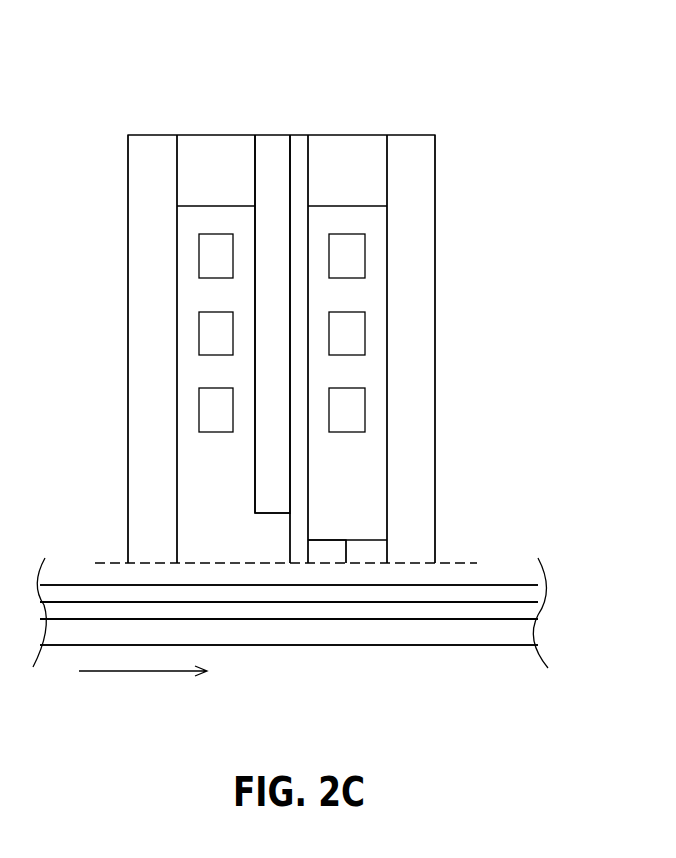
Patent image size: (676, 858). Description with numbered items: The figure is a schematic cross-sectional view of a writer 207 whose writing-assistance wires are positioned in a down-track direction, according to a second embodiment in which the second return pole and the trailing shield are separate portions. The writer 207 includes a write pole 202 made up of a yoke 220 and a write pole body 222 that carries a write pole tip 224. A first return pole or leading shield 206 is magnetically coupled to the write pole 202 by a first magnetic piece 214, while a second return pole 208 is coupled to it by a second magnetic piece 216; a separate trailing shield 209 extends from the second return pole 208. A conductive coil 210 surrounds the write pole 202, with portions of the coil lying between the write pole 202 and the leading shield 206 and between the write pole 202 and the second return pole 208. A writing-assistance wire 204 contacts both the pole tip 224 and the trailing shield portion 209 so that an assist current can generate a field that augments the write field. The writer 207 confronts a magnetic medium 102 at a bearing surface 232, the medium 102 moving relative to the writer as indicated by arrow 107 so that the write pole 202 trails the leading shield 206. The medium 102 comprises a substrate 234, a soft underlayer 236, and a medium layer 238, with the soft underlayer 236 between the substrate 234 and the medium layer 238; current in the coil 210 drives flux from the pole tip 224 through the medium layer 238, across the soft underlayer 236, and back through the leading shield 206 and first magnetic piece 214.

The magnetic medium 102 is at (496, 671).
The arrow 107 is at (116, 672).
The write pole 202 is at (286, 108).
The writing-assistance wire 204 is at (323, 553).
The first return pole or leading shield 206 is at (148, 148).
The writer 207 is at (488, 186).
The second return pole 208 is at (402, 148).
The trailing shield 209 is at (358, 547).
The conductive coil 210 is at (203, 444).
The first magnetic piece 214 is at (192, 148).
The second magnetic piece 216 is at (348, 148).
The yoke 220 is at (272, 148).
The write pole body 222 is at (297, 148).
The write pole tip 224 is at (300, 540).
The bearing surface 232 is at (460, 552).
The substrate 234 is at (398, 632).
The soft underlayer 236 is at (358, 608).
The medium layer 238 is at (313, 593).